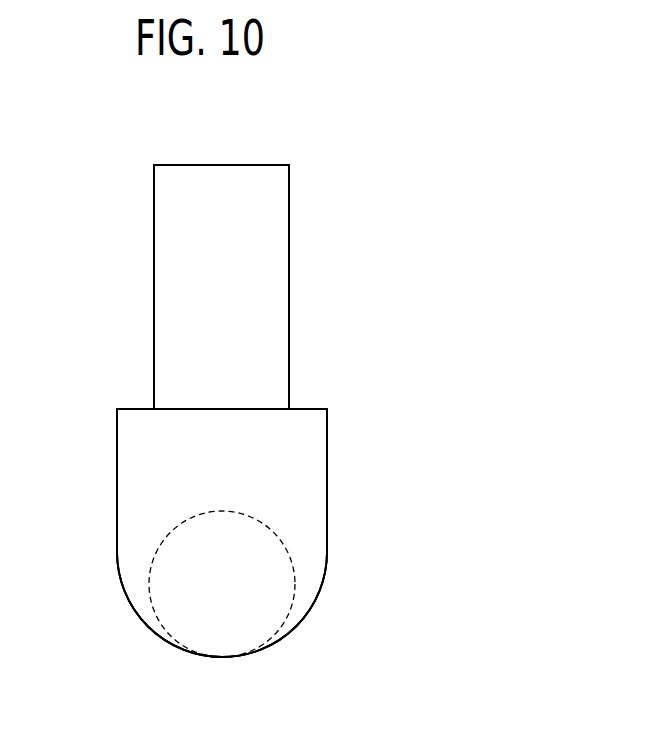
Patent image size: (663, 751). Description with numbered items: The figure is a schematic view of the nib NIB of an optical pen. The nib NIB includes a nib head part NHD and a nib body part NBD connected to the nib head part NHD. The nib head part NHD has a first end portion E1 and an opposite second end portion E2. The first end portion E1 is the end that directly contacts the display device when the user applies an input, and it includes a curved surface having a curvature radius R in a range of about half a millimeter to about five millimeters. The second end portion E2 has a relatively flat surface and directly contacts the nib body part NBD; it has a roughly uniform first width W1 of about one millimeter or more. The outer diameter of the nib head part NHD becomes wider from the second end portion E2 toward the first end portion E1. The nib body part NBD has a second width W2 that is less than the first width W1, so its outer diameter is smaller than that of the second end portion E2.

The nib NIB is at (312, 136).
The nib body part NBD is at (280, 345).
The nib head part NHD is at (318, 462).
The second width W2 is at (289, 248).
The first width W1 is at (327, 430).
The second end portion E2 is at (299, 417).
The first end portion E1 is at (268, 645).
The curvature radius R is at (223, 585).